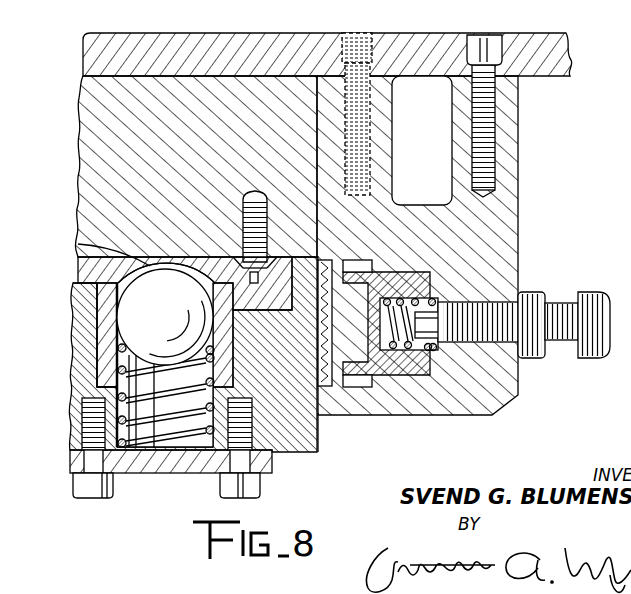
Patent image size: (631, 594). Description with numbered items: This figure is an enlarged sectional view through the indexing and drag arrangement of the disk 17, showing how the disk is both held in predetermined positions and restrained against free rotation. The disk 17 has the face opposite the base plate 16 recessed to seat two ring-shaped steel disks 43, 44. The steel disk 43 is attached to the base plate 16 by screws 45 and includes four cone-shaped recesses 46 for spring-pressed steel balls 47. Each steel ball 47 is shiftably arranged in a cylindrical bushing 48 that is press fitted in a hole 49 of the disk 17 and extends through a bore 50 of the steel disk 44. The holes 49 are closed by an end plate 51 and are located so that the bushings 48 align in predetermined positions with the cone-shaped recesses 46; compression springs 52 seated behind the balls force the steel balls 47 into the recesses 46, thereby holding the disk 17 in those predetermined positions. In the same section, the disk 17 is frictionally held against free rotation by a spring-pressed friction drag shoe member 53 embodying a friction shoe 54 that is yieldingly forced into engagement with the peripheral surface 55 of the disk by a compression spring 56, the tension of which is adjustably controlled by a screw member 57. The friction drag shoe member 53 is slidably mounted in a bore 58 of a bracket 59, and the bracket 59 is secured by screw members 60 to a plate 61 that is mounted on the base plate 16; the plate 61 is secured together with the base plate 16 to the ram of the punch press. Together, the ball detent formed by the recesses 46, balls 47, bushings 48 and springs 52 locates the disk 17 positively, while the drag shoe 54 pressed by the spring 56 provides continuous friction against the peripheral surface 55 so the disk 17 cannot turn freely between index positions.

The base plate 16 is at (82, 157).
The disk 17 is at (303, 450).
The ring-shaped steel disk 43 is at (80, 267).
The ring-shaped steel disk 44 is at (72, 292).
The screws 45 is at (200, 276).
The cone-shaped recesses 46 is at (78, 245).
The steel balls 47 is at (130, 322).
The cylindrical bushings 48 is at (100, 356).
The holes 49 is at (100, 376).
The bores 50 is at (73, 283).
The end plate 51 is at (173, 473).
The compression springs 52 is at (132, 417).
The friction drag shoe member 53 is at (345, 380).
The friction shoe 54 is at (324, 382).
The peripheral surface 55 is at (318, 428).
The compression spring 56 is at (410, 300).
The screw member 57 is at (557, 345).
The bore 58 is at (420, 377).
The bracket 59 is at (445, 224).
The screw members 60 is at (468, 35).
The plate 61 is at (213, 43).